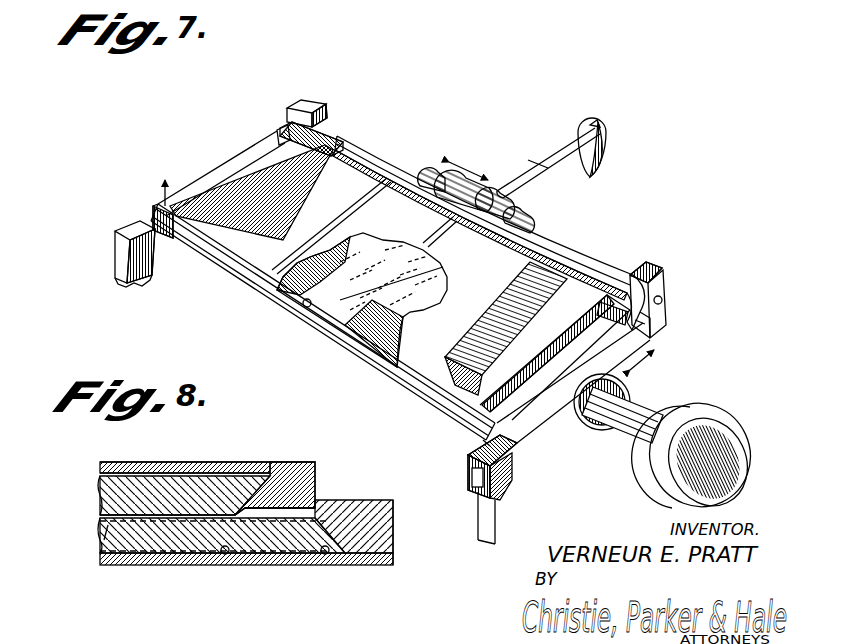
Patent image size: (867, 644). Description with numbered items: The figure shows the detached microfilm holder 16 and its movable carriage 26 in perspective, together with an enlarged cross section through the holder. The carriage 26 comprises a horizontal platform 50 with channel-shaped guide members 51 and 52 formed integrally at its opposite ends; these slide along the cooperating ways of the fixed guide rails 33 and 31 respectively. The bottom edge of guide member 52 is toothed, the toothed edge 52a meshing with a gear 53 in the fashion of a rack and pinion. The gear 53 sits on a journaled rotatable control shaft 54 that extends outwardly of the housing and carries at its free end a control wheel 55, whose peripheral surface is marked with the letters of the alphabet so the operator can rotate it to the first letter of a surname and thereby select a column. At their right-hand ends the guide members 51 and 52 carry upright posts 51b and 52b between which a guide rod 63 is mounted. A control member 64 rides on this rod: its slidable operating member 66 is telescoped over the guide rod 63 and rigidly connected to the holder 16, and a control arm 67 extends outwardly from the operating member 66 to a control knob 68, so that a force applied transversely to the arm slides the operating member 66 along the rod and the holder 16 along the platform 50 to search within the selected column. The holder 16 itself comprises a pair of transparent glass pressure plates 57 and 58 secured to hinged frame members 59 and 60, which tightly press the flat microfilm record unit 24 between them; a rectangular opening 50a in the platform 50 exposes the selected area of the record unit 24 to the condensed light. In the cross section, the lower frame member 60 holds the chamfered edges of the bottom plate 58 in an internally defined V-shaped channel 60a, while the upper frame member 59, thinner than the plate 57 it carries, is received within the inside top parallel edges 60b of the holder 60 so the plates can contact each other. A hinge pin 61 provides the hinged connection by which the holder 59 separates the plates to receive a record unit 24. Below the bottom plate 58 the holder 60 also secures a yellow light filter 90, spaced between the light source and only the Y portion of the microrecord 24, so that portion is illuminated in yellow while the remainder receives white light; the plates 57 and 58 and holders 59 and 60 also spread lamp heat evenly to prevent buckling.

In FIG. 7, the microfilm holder 16 is at (191, 183).
In FIG. 8, the microfilm holder 16 is at (380, 499).
In FIG. 7, the microfilm record unit 24 is at (331, 334).
In FIG. 8, the microfilm record unit 24 is at (110, 566).
In FIG. 7, the movable carriage 26 is at (486, 441).
In FIG. 7, the guide rail 31 is at (540, 437).
In FIG. 7, the guide rail 33 is at (118, 271).
In FIG. 7, the horizontal platform 50 is at (562, 405).
In FIG. 7, the rectangular opening 50a is at (313, 308).
In FIG. 7, the guide member 51 is at (133, 222).
In FIG. 7, the upright post 51b is at (306, 106).
In FIG. 7, the guide member 52 is at (474, 470).
In FIG. 7, the toothed bottom edge 52a is at (492, 484).
In FIG. 7, the upright post 52b is at (652, 266).
In FIG. 7, the gear 53 is at (600, 430).
In FIG. 7, the control shaft 54 is at (640, 428).
In FIG. 7, the control wheel 55 is at (727, 414).
In FIG. 7, the pressure plate 57 is at (313, 201).
In FIG. 8, the pressure plate 57 is at (113, 484).
In FIG. 7, the pressure plate 58 is at (210, 246).
In FIG. 8, the pressure plate 58 is at (100, 526).
In FIG. 7, the hinged frame member 59 is at (268, 262).
In FIG. 8, the hinged frame member 59 is at (196, 463).
In FIG. 8, the hinged frame member 60 is at (157, 566).
In FIG. 8, the V-shaped channel 60a is at (323, 566).
In FIG. 8, the inside top parallel edges 60b is at (320, 496).
In FIG. 7, the hinge pin 61 is at (668, 332).
In FIG. 7, the guide rod 63 is at (556, 248).
In FIG. 7, the control member 64 is at (550, 142).
In FIG. 7, the operating member 66 is at (466, 172).
In FIG. 7, the control arm 67 is at (535, 178).
In FIG. 7, the control knob 68 is at (612, 150).
In FIG. 8, the light filter 90 is at (228, 553).